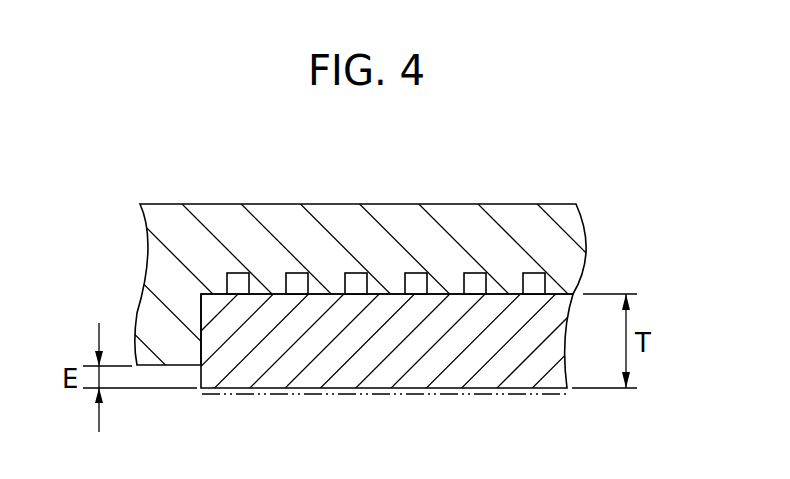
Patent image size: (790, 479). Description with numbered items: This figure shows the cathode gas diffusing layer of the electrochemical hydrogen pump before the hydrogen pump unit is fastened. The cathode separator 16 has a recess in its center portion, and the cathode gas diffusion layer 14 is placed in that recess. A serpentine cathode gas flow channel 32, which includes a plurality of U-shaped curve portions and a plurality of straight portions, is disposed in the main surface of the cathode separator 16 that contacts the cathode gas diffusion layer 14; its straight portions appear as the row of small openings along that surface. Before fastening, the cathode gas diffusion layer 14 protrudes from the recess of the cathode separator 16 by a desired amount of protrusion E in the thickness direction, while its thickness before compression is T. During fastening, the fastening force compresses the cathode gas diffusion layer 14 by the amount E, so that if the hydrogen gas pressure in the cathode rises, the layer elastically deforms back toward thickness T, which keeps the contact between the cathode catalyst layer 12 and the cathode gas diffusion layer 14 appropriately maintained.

The cathode catalyst layer 12 is at (202, 394).
The cathode gas diffusion layer 14 is at (576, 326).
The cathode separator 16 is at (336, 214).
The cathode gas flow channel 32 is at (475, 280).